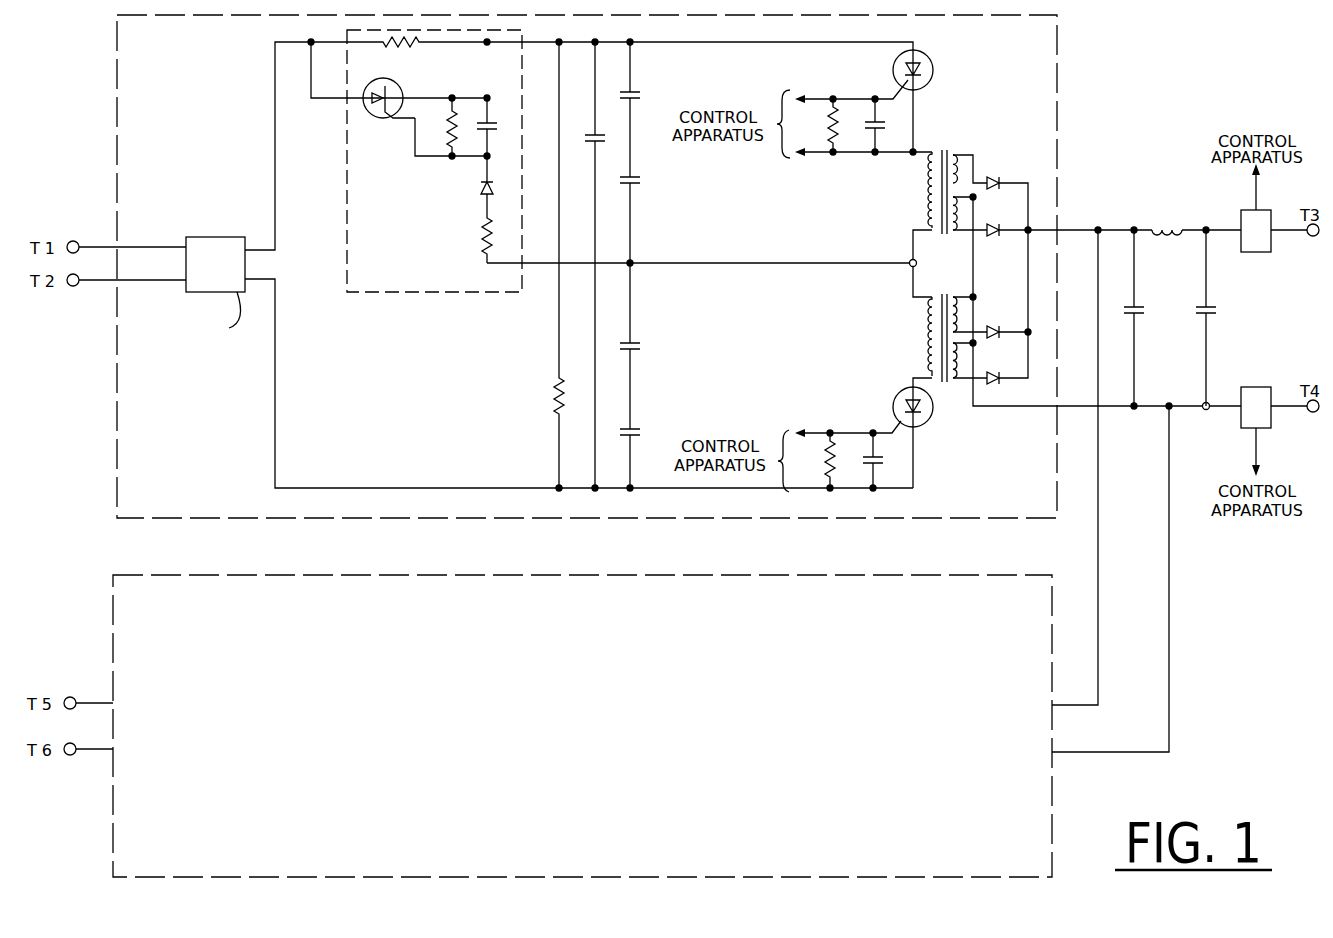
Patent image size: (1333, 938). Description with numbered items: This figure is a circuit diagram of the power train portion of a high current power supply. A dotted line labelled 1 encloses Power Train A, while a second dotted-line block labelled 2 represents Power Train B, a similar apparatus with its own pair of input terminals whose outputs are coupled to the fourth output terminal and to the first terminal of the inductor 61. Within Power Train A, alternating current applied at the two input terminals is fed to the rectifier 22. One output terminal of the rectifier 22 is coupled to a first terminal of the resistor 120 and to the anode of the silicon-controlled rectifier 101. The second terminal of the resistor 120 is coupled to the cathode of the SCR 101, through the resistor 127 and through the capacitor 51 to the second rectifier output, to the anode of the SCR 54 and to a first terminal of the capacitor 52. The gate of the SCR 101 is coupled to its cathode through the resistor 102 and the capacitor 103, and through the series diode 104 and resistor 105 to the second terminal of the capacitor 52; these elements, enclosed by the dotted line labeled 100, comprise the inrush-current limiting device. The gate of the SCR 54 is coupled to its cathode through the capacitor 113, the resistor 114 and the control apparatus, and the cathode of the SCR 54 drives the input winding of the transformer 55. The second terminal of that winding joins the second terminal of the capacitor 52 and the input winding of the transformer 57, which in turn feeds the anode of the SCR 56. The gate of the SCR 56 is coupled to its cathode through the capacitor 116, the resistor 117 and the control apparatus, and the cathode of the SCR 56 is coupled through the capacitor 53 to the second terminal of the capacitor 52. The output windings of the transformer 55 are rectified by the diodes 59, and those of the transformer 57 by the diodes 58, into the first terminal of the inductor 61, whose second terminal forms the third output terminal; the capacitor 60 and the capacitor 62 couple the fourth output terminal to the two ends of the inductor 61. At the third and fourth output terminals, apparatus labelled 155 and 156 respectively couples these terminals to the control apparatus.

The Power Train A 1 is at (117, 100).
The Power Train B 2 is at (113, 620).
The rectifier 22 is at (218, 237).
The capacitor 51 is at (584, 138).
The capacitor 52 is at (619, 96).
The capacitor 53 is at (619, 346).
The silicon-controlled rectifier 54 is at (934, 69).
The transformer 55 is at (943, 150).
The silicon-controlled rectifier 56 is at (928, 422).
The transformer 57 is at (943, 382).
The diodes 58 is at (1002, 345).
The diodes 59 is at (1002, 197).
The capacitor 60 is at (1145, 312).
The inductor 61 is at (1168, 224).
The capacitor 62 is at (1217, 311).
The inrush-current limiting device 100 is at (347, 148).
The silicon-controlled rectifier 101 is at (375, 118).
The resistor 102 is at (450, 116).
The capacitor 103 is at (478, 130).
The diode 104 is at (481, 191).
The resistor 105 is at (481, 238).
The capacitor 113 is at (868, 122).
The resistor 114 is at (836, 148).
The capacitor 116 is at (884, 462).
The resistor 117 is at (835, 484).
The resistor 120 is at (397, 47).
The resistor 127 is at (553, 385).
The control apparatus coupling apparatus 155 is at (1256, 252).
The control apparatus coupling apparatus 156 is at (1262, 387).